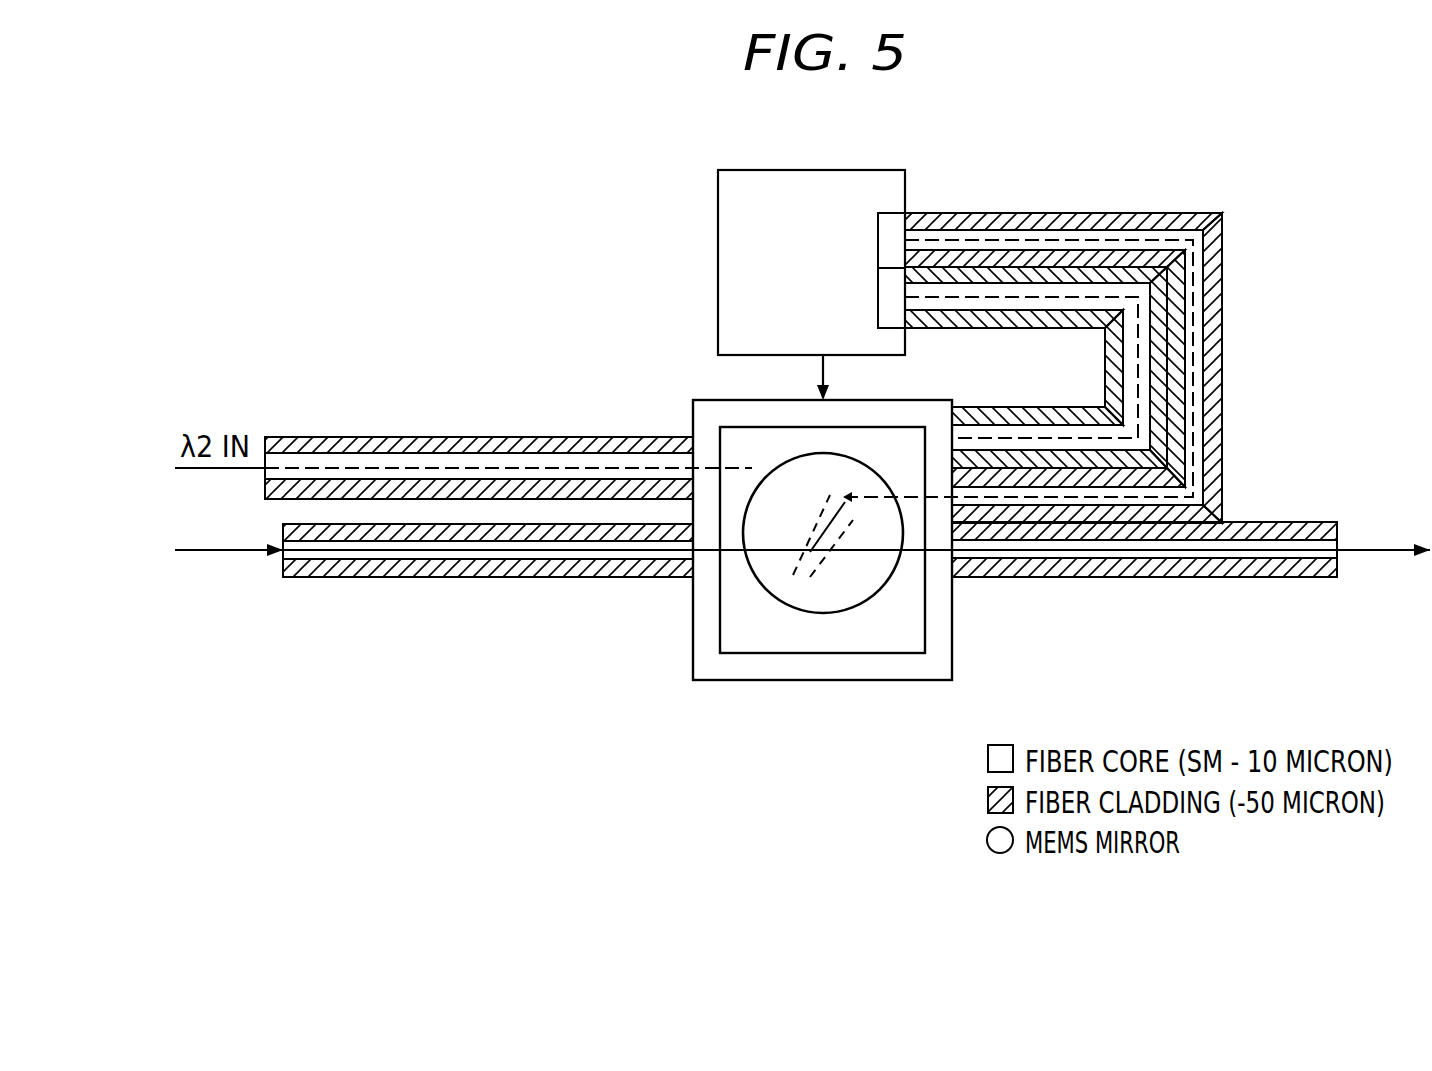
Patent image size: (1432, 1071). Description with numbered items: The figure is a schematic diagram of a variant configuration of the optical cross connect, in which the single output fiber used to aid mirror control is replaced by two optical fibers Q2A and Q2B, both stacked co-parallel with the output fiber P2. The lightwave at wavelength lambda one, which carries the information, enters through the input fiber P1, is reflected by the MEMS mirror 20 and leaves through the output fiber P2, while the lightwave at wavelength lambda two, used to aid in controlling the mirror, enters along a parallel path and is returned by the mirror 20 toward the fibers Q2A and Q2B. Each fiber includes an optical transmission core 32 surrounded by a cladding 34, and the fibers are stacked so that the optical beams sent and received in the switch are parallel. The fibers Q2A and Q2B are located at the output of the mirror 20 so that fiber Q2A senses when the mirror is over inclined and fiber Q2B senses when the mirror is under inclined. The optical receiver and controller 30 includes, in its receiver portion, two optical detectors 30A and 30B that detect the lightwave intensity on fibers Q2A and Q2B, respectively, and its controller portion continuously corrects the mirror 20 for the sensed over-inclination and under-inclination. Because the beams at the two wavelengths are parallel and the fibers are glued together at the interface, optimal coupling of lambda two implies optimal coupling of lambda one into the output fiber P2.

The mirror 20 is at (765, 593).
The optical receiver and controller 30 is at (815, 170).
The optical detector 30A is at (897, 326).
The optical detector 30B is at (888, 228).
The optical transmission core 32 is at (1002, 540).
The cladding 34 is at (976, 582).
The optical fiber Q2A is at (1080, 378).
The optical fiber Q2B is at (1228, 345).
The input fiber P1 is at (802, 566).
The output fiber P2 is at (1192, 563).